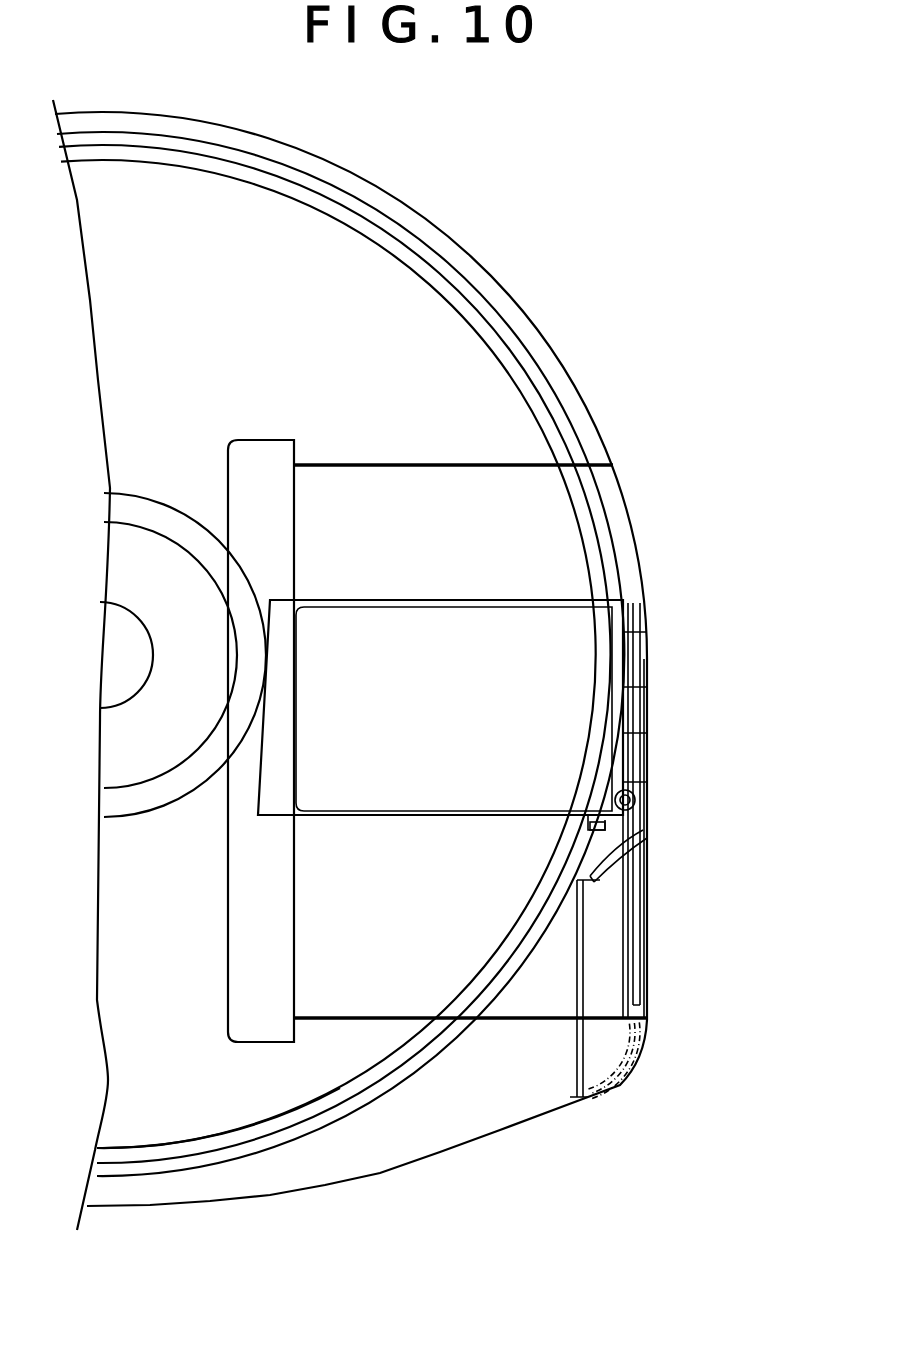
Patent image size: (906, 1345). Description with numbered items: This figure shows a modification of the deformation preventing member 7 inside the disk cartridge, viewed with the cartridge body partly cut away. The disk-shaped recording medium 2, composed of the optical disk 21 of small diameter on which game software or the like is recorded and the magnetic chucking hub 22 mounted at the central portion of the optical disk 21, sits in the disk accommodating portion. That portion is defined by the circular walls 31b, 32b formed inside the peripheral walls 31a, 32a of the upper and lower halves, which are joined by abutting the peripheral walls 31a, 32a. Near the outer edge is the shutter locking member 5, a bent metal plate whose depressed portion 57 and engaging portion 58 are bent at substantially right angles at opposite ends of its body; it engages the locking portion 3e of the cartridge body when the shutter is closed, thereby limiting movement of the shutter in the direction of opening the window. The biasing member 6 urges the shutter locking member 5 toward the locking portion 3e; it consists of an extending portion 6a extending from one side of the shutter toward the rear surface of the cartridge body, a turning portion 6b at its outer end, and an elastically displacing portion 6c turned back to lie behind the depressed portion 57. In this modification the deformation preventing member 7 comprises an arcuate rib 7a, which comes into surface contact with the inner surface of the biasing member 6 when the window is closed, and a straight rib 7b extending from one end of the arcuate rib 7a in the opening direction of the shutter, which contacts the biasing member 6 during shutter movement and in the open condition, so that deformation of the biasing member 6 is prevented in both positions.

The disk-shaped recording medium 2 is at (725, 282).
The optical disk 21 is at (503, 397).
The chucking hub 22 is at (190, 570).
The shutter locking member 5 is at (620, 793).
The depressed portion 57 is at (627, 750).
The engaging portion 58 is at (610, 812).
The locking portion 3e is at (580, 852).
The biasing member 6 is at (757, 795).
The extending portion 6a is at (620, 848).
The turning portion 6b is at (600, 880).
The elastically displacing portion 6c is at (605, 870).
The deformation preventing member 7 is at (428, 908).
The arcuate rib 7a is at (575, 882).
The straight rib 7b is at (578, 990).
The peripheral wall 31a is at (283, 1193).
The circular wall 31b is at (355, 1113).
The peripheral wall 32a is at (367, 1148).
The circular wall 32b is at (251, 1180).